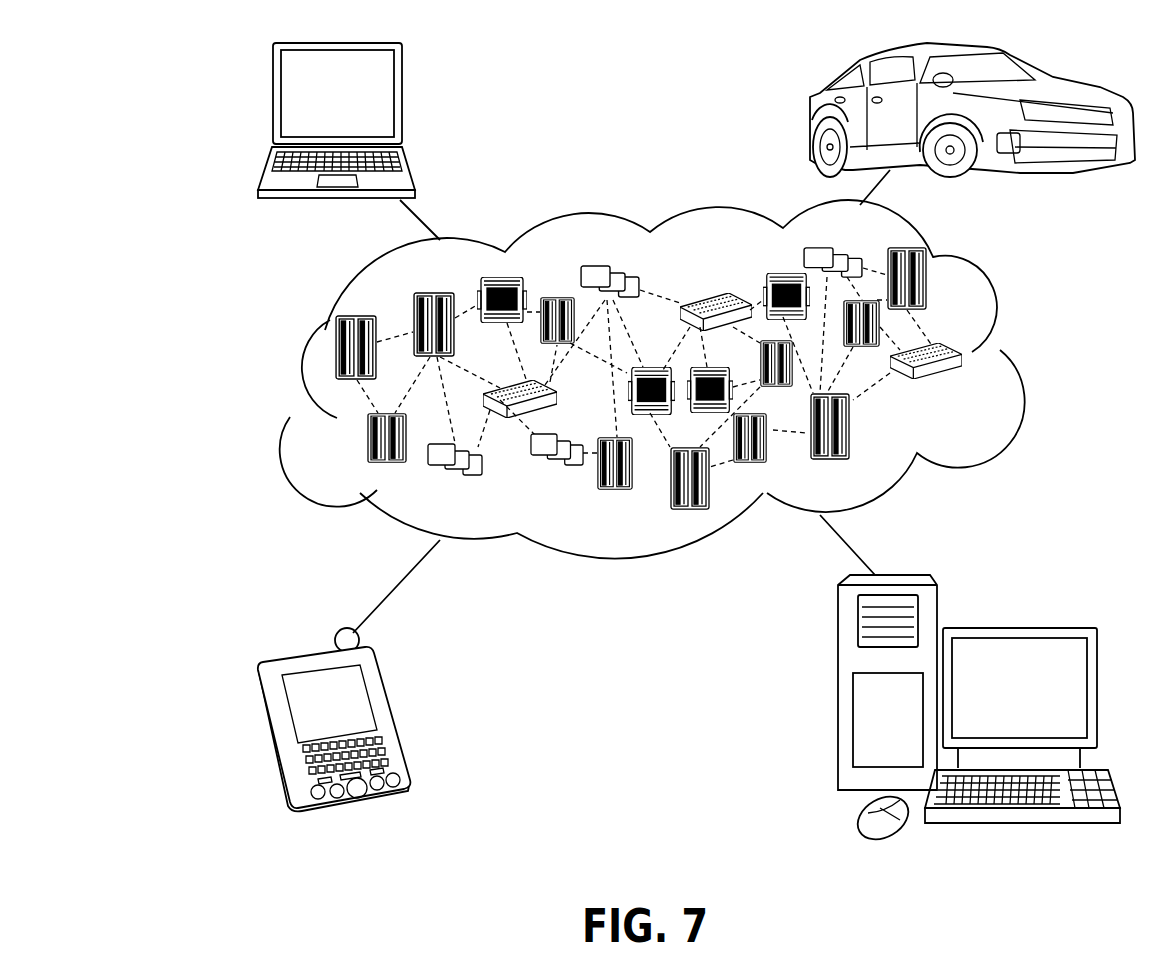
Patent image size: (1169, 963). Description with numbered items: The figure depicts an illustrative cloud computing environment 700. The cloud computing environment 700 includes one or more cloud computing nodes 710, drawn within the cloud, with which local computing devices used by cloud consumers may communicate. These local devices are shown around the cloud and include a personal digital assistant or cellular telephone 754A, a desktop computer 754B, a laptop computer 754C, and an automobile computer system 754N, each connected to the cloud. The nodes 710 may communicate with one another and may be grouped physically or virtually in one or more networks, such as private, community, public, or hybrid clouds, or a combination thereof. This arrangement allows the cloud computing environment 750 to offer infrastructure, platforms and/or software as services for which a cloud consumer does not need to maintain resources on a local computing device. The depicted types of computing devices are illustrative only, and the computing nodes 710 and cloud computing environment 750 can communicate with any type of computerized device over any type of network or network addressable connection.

The cloud computing environment 700 is at (116, 64).
The cloud computing environment 750 is at (1003, 352).
The cloud computing nodes 710 is at (965, 385).
The personal digital assistant (PDA) or cellular telephone 754A is at (393, 716).
The desktop computer 754B is at (1017, 627).
The laptop computer 754C is at (403, 99).
The automobile computer system 754N is at (810, 117).